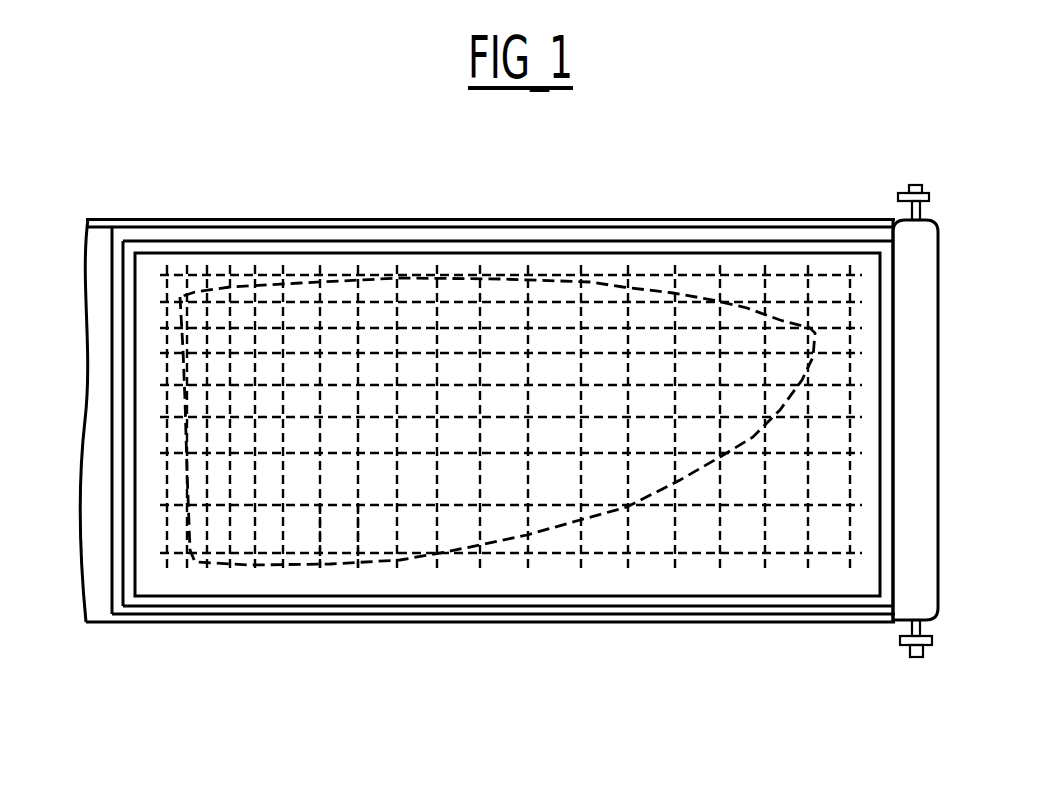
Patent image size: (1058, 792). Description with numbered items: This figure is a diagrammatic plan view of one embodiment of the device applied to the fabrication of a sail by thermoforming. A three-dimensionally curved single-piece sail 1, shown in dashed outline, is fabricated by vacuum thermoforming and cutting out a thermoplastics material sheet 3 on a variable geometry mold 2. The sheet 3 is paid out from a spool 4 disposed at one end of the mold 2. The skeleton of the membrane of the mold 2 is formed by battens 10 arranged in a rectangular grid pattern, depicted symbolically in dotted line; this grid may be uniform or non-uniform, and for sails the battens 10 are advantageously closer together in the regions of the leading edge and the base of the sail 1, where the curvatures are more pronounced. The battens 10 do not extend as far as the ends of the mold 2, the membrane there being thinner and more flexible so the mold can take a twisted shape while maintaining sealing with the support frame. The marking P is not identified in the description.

The printing plate / support P is at (170, 622).
The sail 1 is at (593, 517).
The variable geometry mold 2 is at (693, 640).
The thermoplastics material sheet 3 is at (797, 570).
The spool 4 is at (925, 587).
The battens 10 is at (317, 513).